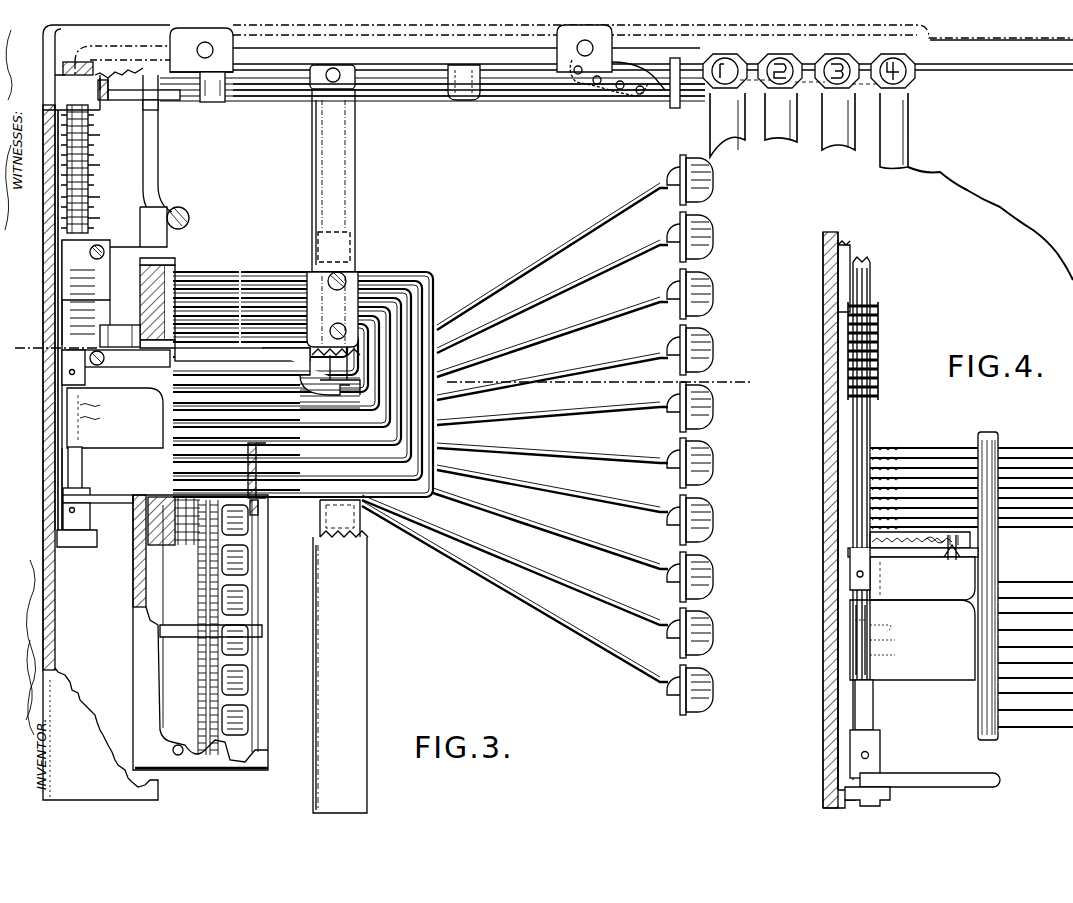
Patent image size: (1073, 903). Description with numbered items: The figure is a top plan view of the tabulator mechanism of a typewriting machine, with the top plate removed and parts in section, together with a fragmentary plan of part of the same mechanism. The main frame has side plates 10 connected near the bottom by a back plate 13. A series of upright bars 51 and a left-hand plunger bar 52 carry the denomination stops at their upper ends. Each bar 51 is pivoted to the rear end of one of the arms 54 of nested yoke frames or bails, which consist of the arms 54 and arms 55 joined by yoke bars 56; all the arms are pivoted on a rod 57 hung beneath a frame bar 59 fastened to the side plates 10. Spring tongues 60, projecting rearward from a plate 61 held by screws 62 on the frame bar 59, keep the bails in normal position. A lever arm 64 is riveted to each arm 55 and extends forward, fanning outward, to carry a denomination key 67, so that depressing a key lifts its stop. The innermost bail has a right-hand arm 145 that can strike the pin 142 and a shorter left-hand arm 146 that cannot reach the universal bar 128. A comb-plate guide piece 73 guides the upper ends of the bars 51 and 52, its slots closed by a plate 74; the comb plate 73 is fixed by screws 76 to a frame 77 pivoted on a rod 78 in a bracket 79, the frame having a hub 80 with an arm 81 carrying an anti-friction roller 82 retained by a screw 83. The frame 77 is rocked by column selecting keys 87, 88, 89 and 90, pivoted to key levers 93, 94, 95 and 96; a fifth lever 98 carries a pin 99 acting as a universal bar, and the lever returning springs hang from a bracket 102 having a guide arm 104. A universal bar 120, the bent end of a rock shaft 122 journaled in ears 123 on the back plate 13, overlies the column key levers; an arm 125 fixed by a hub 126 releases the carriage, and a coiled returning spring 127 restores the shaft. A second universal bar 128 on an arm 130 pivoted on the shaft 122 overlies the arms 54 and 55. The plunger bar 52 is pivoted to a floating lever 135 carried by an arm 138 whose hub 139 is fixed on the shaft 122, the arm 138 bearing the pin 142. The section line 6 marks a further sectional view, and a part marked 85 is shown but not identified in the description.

In FIG. 3, the section line 6 is at (381, 365).
In FIG. 3, the side plates 10 is at (398, 58).
In FIG. 3, the back plate 13 is at (48, 474).
In FIG. 4, the back plate 13 is at (826, 566).
In FIG. 4, the upright bars 51 is at (890, 446).
In FIG. 4, the plunger bar 52 is at (920, 539).
In FIG. 3, the arms of nested bails 54 is at (218, 282).
In FIG. 4, the arms of nested bails 54 is at (934, 452).
In FIG. 3, the arms of nested bails 55 is at (214, 402).
In FIG. 4, the arms of nested bails 55 is at (1016, 600).
In FIG. 3, the yoke bars 56 is at (430, 280).
In FIG. 3, the rod 57 is at (336, 358).
In FIG. 3, the frame bar 59 is at (356, 166).
In FIG. 3, the spring tongues 60 is at (258, 280).
In FIG. 3, the plate 61 is at (332, 309).
In FIG. 3, the screws 62 is at (345, 278).
In FIG. 3, the lever arm 64 is at (605, 270).
In FIG. 3, the denomination key 67 is at (706, 672).
In FIG. 3, the comb plate 73 is at (104, 272).
In FIG. 3, the plate 74 is at (58, 268).
In FIG. 3, the screws 76 is at (100, 250).
In FIG. 3, the frame 77 is at (100, 237).
In FIG. 3, the rod 78 is at (172, 258).
In FIG. 3, the bracket 79 is at (140, 291).
In FIG. 3, the hub 80 is at (146, 205).
In FIG. 3, the arm 81 is at (160, 142).
In FIG. 3, the anti-friction roller 82 is at (140, 102).
In FIG. 3, the screw 83 is at (164, 66).
In FIG. 3, the slide block 85 is at (120, 336).
In FIG. 3, the column selecting key 87 is at (733, 58).
In FIG. 3, the column selecting key 88 is at (790, 58).
In FIG. 3, the column selecting key 89 is at (847, 58).
In FIG. 3, the column selecting key 90 is at (906, 82).
In FIG. 3, the key lever 93 is at (478, 98).
In FIG. 3, the key lever 94 is at (510, 88).
In FIG. 3, the key lever 95 is at (540, 92).
In FIG. 3, the key lever 96 is at (560, 98).
In FIG. 3, the universal lever 98 is at (586, 88).
In FIG. 3, the pin 99 is at (236, 72).
In FIG. 3, the bracket 102 is at (615, 68).
In FIG. 3, the guide arm 104 is at (672, 100).
In FIG. 3, the universal bar 120 is at (212, 102).
In FIG. 3, the rock shaft 122 is at (82, 470).
In FIG. 4, the rock shaft 122 is at (873, 700).
In FIG. 3, the ears 123 is at (88, 548).
In FIG. 4, the ears 123 is at (890, 796).
In FIG. 3, the arm 125 is at (90, 526).
In FIG. 4, the arm 125 is at (905, 775).
In FIG. 3, the hub 126 is at (88, 496).
In FIG. 4, the hub 126 is at (880, 742).
In FIG. 4, the returning spring 127 is at (878, 348).
In FIG. 4, the universal bar 128 is at (990, 432).
In FIG. 3, the arm 130 is at (115, 418).
In FIG. 4, the floating lever 135 is at (922, 560).
In FIG. 3, the arm 138 is at (128, 370).
In FIG. 4, the arm 138 is at (900, 560).
In FIG. 3, the hub 139 is at (60, 386).
In FIG. 4, the hub 139 is at (853, 588).
In FIG. 4, the pin 142 is at (954, 560).
In FIG. 3, the right-hand arm of innermost bail 145 is at (242, 355).
In FIG. 3, the left-hand arm of innermost bail 146 is at (305, 380).